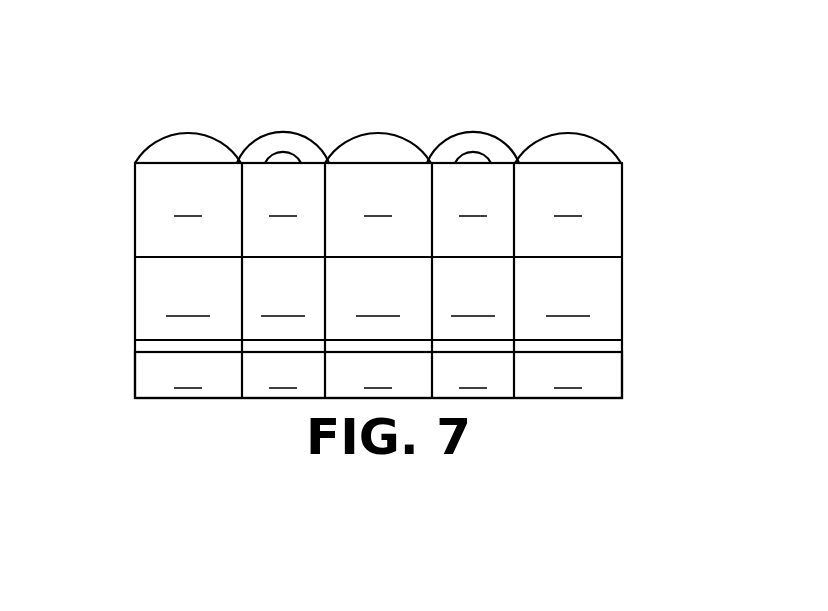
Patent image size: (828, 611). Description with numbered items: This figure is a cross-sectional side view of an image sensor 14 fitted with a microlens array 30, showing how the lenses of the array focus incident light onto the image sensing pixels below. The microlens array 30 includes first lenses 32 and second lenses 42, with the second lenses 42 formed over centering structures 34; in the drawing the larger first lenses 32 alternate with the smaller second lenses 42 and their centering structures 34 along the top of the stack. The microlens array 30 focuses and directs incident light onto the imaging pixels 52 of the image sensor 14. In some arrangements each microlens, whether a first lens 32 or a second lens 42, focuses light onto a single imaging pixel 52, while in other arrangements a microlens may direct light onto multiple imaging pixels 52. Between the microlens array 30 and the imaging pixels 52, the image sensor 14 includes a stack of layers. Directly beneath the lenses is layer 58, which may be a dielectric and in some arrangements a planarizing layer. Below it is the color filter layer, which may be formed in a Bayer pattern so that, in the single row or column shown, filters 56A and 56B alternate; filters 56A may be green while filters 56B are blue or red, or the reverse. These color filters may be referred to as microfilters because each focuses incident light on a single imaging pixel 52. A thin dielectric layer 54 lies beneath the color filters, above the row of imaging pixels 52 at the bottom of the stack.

The image sensor 14 is at (627, 43).
The microlens array 30 is at (640, 143).
The first lenses 32 is at (189, 134).
The centering structures 34 is at (275, 155).
The second lenses 42 is at (283, 138).
The imaging pixels 52 is at (378, 375).
The dielectric layer 54 is at (116, 344).
The color filters 56A is at (378, 298).
The color filters 56B is at (378, 298).
The dielectric layer 58 is at (378, 210).